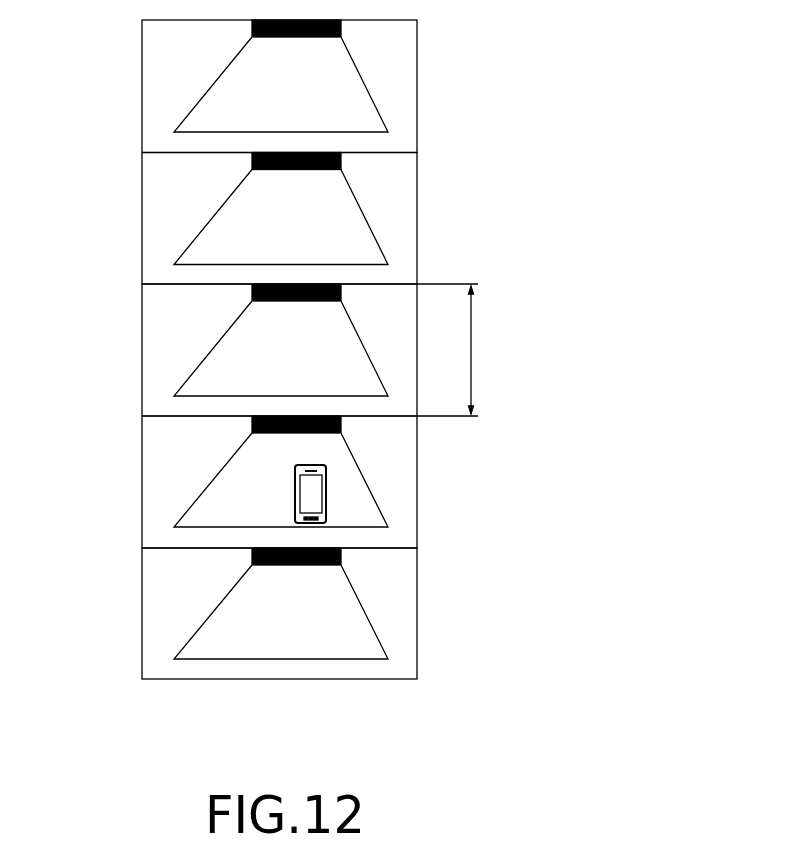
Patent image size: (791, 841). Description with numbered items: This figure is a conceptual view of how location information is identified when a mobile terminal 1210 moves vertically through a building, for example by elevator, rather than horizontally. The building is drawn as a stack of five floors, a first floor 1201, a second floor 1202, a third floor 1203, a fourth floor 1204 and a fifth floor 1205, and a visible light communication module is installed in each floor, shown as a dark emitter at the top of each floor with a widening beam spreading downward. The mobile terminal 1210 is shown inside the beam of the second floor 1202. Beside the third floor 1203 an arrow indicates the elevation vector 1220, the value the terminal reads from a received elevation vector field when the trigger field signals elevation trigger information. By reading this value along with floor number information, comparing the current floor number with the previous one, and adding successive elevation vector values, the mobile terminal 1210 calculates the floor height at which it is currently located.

The first floor 1201 is at (142, 604).
The second floor 1202 is at (142, 472).
The third floor 1203 is at (142, 340).
The fourth floor 1204 is at (142, 208).
The fifth floor 1205 is at (142, 76).
The mobile terminal 1210 is at (295, 492).
The elevation vector 1220 is at (565, 353).